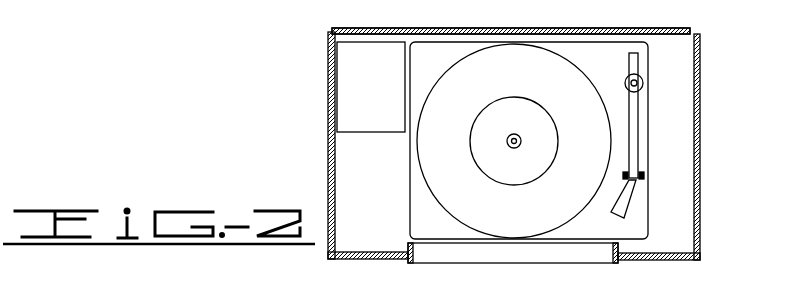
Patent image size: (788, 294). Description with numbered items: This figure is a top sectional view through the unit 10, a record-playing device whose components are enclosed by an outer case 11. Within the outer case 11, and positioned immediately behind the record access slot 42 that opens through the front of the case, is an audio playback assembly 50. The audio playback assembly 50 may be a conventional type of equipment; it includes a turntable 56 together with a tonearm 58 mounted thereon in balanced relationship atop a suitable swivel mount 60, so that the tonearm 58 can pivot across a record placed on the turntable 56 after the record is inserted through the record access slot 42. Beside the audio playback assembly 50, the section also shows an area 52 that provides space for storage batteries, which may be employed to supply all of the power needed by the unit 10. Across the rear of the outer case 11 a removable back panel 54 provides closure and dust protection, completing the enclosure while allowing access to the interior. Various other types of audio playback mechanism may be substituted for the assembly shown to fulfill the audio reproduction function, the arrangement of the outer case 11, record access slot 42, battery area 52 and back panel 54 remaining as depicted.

The record player casing 10 is at (326, 106).
The outer case 11 is at (699, 181).
The record access slot 42 is at (508, 256).
The audio playback assembly 50 is at (447, 229).
The area for storage batteries 52 is at (383, 93).
The removable back panel 54 is at (381, 27).
The turntable 56 is at (552, 211).
The tonearm 58 is at (634, 128).
The swivel mount 60 is at (645, 84).